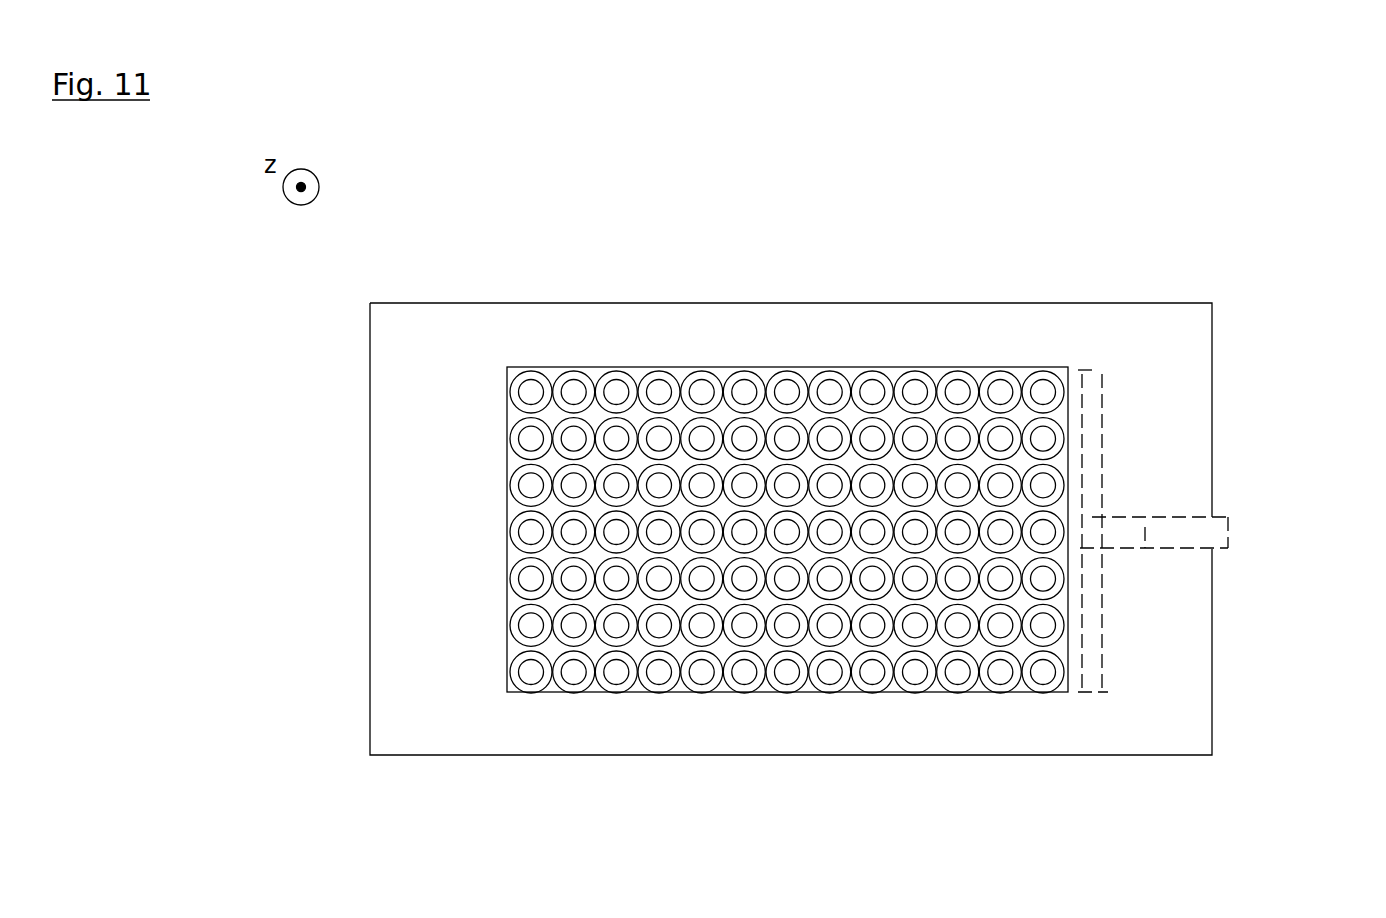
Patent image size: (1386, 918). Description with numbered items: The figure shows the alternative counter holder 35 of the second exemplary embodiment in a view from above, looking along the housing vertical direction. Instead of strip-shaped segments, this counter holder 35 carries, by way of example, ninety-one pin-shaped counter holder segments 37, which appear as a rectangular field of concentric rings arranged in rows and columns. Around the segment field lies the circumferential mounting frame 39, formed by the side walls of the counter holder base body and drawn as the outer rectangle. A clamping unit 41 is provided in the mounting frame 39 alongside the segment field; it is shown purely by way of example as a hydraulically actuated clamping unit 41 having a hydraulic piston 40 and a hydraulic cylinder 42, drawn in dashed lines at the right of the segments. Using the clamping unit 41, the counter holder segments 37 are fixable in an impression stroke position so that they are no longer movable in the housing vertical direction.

The counter holder 35 is at (573, 286).
The counter holder segments 37 is at (903, 694).
The mounting frame 39 is at (542, 729).
The hydraulic piston 40 is at (1082, 470).
The clamping unit 41 is at (1232, 531).
The hydraulic cylinder 42 is at (1204, 513).